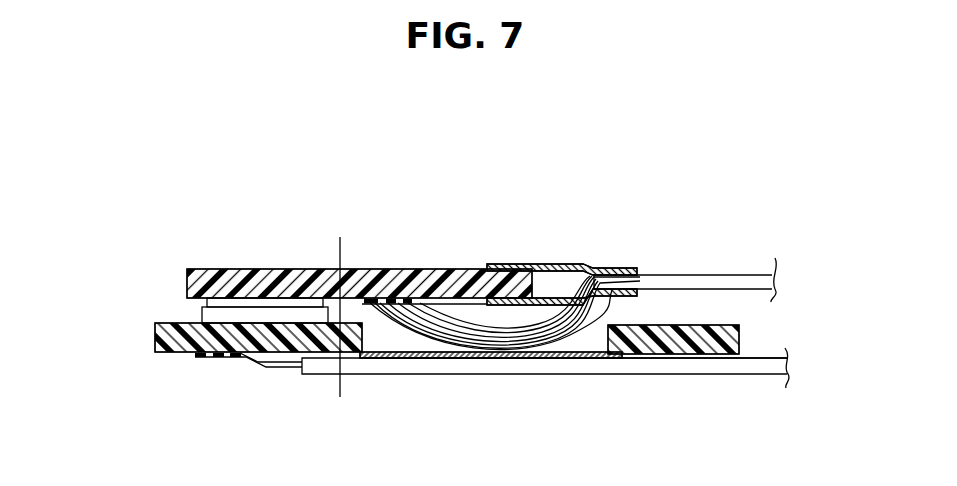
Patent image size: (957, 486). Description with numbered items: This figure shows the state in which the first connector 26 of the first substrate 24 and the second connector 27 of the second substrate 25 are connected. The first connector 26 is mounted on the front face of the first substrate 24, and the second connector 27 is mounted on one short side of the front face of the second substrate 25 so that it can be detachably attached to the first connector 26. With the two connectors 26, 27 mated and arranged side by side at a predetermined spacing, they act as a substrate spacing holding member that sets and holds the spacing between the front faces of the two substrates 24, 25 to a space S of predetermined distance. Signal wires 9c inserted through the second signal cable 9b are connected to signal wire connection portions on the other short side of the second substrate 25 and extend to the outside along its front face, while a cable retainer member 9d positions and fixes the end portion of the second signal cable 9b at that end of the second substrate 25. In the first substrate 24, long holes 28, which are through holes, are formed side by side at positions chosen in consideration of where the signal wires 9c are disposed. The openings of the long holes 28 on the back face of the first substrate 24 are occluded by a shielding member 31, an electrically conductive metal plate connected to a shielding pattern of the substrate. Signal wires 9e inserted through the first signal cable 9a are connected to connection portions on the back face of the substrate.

The second substrate 25 is at (397, 269).
The second connector 27 is at (263, 305).
The first connector 26 is at (233, 315).
The first substrate 24 is at (277, 357).
The signal wires 9e is at (290, 367).
The first signal cable 9a is at (754, 367).
The second signal cable 9b is at (752, 283).
The signal wires 9c is at (461, 318).
The cable retainer member 9d is at (567, 264).
The long holes 28 is at (402, 355).
The shielding member 31 is at (495, 360).
The space S is at (332, 315).